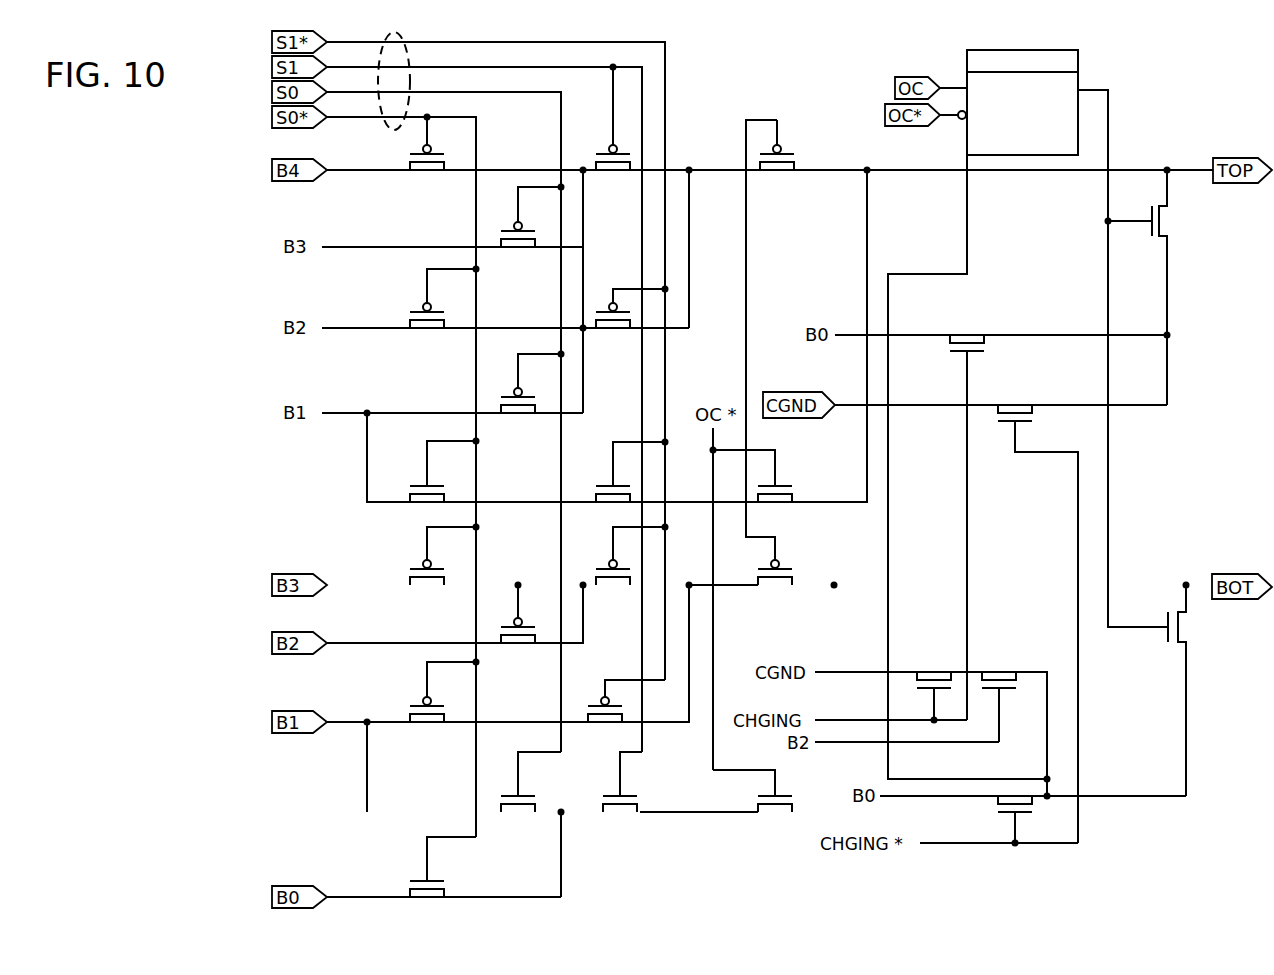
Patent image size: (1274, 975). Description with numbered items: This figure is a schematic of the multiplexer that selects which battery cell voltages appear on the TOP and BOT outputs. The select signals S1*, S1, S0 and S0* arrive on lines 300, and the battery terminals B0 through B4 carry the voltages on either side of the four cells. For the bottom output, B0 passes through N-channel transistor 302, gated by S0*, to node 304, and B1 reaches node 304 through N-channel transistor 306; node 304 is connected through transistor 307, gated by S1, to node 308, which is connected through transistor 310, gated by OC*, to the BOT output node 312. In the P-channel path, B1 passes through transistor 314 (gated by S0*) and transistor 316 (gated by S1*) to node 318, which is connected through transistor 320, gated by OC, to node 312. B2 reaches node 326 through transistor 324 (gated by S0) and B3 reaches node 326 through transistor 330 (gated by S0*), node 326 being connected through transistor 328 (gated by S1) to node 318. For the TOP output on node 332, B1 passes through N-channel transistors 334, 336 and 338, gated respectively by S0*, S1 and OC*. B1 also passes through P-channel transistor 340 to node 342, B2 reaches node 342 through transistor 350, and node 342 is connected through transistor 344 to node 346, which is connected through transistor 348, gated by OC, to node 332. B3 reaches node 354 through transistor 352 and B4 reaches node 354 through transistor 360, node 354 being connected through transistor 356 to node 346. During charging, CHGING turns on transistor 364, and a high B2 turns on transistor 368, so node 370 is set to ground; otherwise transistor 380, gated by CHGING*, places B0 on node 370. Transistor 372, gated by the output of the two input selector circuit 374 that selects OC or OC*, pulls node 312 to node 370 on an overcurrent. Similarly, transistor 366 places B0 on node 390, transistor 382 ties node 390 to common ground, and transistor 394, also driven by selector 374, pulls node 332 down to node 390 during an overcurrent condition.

The lines 300 is at (396, 130).
The N-channel transistor 302 is at (410, 893).
The node 304 is at (564, 810).
The N-channel transistor 306 is at (510, 815).
The N-channel transistor 307 is at (626, 815).
The node 308 is at (708, 815).
The N-channel transistor 310 is at (768, 815).
The node 312 is at (1186, 582).
The P-channel transistor 314 is at (420, 725).
The P-channel transistor 316 is at (588, 720).
The node 318 is at (738, 590).
The P-channel transistor 320 is at (778, 590).
The P-channel transistor 324 is at (514, 646).
The node 326 is at (581, 582).
The P-channel transistor 328 is at (608, 588).
The P-channel transistor 330 is at (418, 588).
The node 332 is at (1168, 165).
The N-channel transistor 334 is at (424, 505).
The N-channel transistor 336 is at (598, 500).
The N-channel transistor 338 is at (784, 505).
The P-channel transistor 340 is at (514, 416).
The node 342 is at (583, 325).
The P-channel transistor 344 is at (608, 331).
The node 346 is at (692, 166).
The P-channel transistor 348 is at (778, 173).
The P-channel transistor 350 is at (420, 331).
The P-channel transistor 352 is at (512, 250).
The node 354 is at (583, 166).
The P-channel transistor 356 is at (610, 173).
The P-channel transistor 360 is at (420, 173).
The N-channel transistor 364 is at (928, 668).
The transistor 366 is at (970, 334).
The N-channel transistor 368 is at (1004, 668).
The node 370 is at (1108, 798).
The N-channel transistor 372 is at (1180, 630).
The two input selector circuit 374 is at (1082, 56).
The N-channel transistor 380 is at (998, 806).
The N-channel transistor 382 is at (1012, 408).
The node 390 is at (1170, 333).
The N-channel transistor 394 is at (1170, 225).